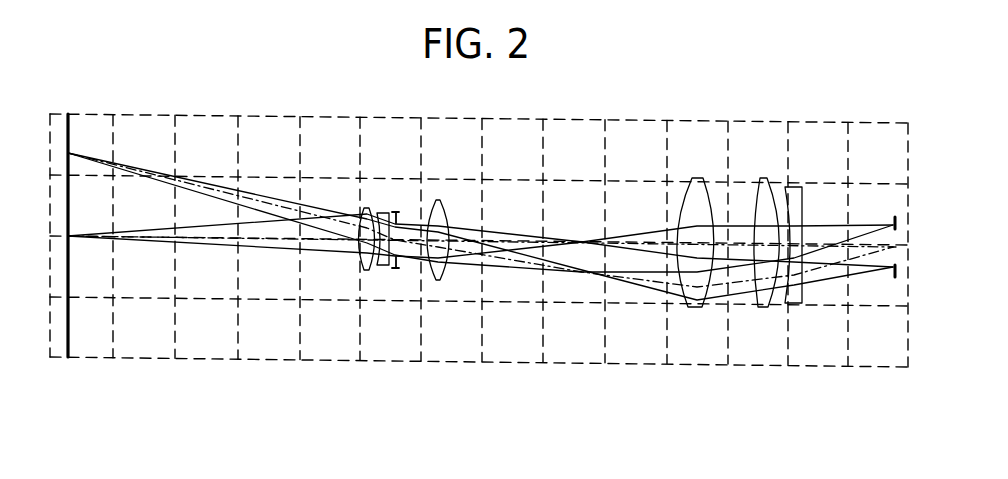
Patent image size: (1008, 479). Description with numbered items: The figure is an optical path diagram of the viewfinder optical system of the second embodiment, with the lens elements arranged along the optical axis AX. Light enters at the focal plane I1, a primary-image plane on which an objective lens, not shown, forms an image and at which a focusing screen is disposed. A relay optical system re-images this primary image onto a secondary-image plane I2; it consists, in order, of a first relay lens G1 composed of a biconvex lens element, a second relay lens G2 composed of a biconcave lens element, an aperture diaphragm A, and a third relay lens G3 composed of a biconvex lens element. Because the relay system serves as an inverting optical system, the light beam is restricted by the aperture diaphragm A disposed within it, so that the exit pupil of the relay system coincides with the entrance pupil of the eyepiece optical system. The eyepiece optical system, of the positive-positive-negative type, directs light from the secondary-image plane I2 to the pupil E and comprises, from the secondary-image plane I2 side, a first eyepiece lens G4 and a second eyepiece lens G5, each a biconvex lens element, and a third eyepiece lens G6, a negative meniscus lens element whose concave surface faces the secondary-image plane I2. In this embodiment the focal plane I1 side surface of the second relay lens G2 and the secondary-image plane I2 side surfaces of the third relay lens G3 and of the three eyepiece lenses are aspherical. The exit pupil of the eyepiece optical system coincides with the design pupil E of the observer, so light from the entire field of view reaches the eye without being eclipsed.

The focal plane I1 is at (70, 316).
The first relay lens G1 is at (365, 270).
The second relay lens G2 is at (380, 266).
The aperture diaphragm A is at (396, 268).
The third relay lens G3 is at (440, 282).
The secondary-image plane I2 is at (575, 283).
The first eyepiece lens G4 is at (690, 308).
The second eyepiece lens G5 is at (761, 308).
The third eyepiece lens G6 is at (790, 303).
The optical axis AX is at (480, 333).
The pupil E is at (894, 277).